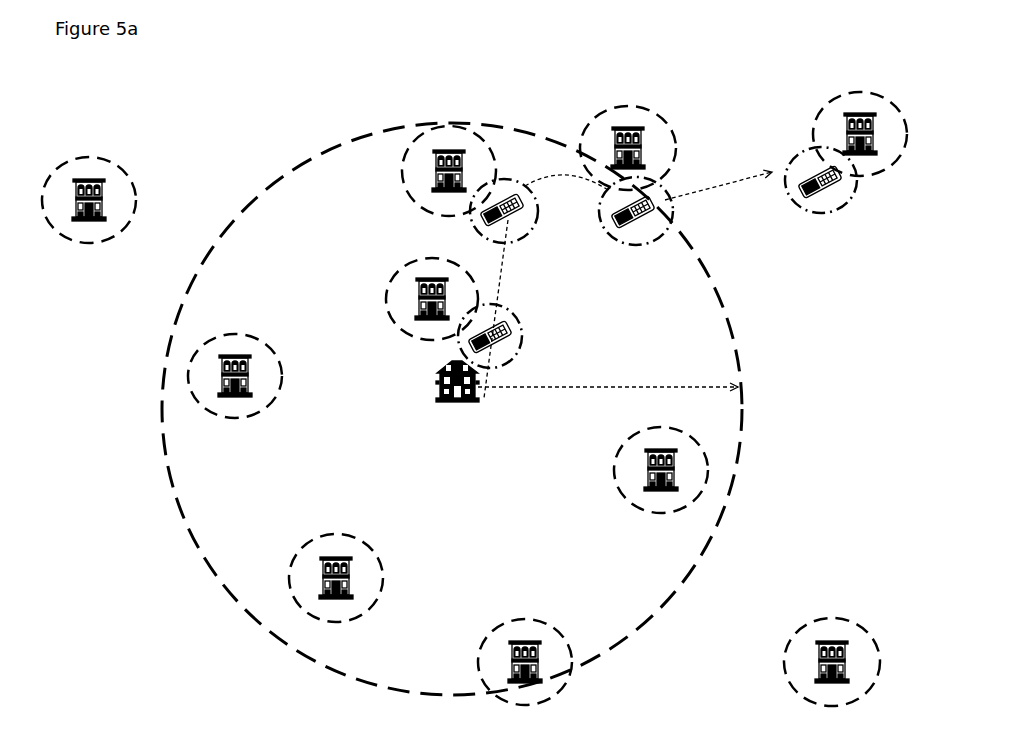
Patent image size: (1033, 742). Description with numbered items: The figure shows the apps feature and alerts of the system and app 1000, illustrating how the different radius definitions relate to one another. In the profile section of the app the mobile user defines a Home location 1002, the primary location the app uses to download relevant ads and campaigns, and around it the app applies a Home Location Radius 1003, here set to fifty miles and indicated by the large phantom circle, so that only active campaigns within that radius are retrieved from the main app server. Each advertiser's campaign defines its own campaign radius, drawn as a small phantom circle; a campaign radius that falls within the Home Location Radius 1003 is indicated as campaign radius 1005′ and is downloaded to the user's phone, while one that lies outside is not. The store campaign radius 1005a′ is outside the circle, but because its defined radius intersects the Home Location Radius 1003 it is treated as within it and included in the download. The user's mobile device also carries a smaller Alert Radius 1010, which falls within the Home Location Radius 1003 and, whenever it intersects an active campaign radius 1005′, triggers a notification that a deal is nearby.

The system and app 1000 is at (247, 117).
The Home Location Radius (HLR) 1003 is at (180, 310).
The Home location 1002 is at (417, 207).
The Campaign Radius within the HLR 1005′ is at (435, 383).
The intersecting store campaign radius 1005a′ is at (597, 117).
The Alert Radius (AR) 1010 is at (525, 236).